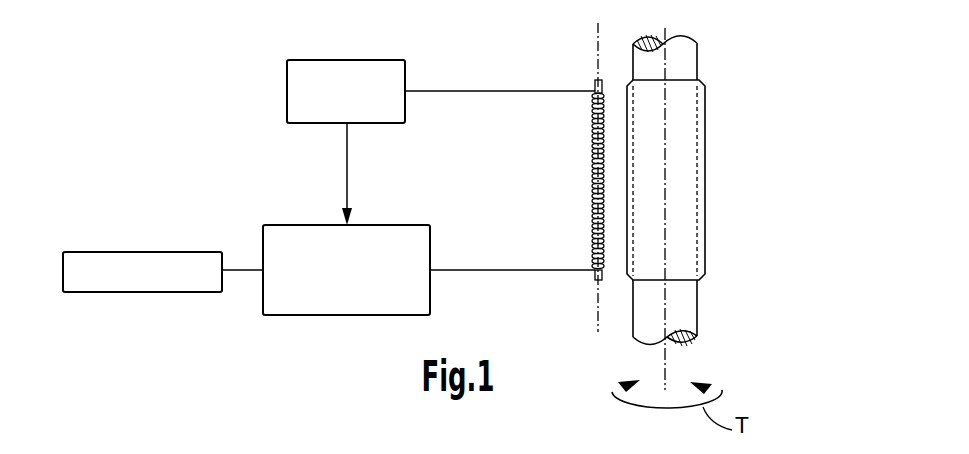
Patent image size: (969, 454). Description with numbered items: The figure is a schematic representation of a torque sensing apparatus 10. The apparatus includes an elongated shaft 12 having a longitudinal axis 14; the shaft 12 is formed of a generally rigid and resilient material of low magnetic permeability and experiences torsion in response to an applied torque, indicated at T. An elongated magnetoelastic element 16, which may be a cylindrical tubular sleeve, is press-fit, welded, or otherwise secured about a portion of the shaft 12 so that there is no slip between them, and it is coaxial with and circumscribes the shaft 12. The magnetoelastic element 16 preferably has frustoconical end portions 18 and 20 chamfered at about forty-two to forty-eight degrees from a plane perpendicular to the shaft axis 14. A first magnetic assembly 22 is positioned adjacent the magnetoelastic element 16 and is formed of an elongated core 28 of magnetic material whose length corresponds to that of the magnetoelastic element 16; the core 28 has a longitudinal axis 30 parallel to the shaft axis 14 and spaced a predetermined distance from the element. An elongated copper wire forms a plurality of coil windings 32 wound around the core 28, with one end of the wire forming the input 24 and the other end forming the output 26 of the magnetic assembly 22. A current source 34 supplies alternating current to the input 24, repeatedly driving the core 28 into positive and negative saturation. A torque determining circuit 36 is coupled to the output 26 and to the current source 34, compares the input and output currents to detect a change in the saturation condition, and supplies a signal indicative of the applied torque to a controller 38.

The torque sensing apparatus 10 is at (245, 152).
The shaft 12 is at (697, 58).
The longitudinal axis 14 is at (666, 374).
The magnetoelastic element 16 is at (701, 180).
The frustoconical end portion 18 is at (705, 80).
The frustoconical end portion 20 is at (703, 280).
The magnetic assembly 22 is at (556, 163).
The input 24 is at (453, 90).
The output 26 is at (492, 270).
The core 28 is at (595, 88).
The core axis 30 is at (598, 23).
The coil windings 32 is at (593, 192).
The current source 34 is at (340, 60).
The torque determining circuit 36 is at (430, 288).
The controller 38 is at (142, 292).